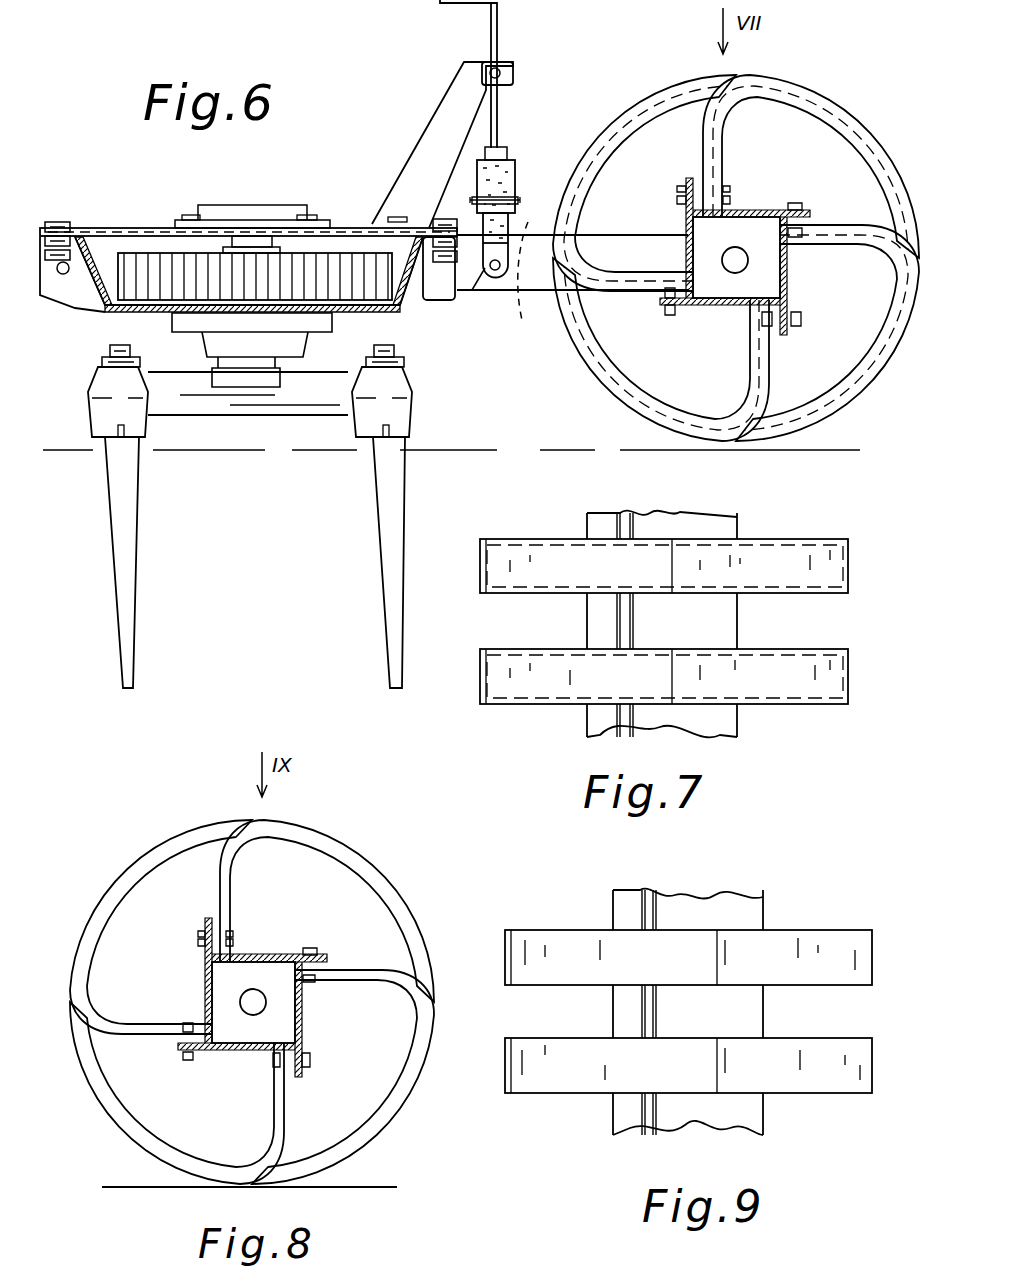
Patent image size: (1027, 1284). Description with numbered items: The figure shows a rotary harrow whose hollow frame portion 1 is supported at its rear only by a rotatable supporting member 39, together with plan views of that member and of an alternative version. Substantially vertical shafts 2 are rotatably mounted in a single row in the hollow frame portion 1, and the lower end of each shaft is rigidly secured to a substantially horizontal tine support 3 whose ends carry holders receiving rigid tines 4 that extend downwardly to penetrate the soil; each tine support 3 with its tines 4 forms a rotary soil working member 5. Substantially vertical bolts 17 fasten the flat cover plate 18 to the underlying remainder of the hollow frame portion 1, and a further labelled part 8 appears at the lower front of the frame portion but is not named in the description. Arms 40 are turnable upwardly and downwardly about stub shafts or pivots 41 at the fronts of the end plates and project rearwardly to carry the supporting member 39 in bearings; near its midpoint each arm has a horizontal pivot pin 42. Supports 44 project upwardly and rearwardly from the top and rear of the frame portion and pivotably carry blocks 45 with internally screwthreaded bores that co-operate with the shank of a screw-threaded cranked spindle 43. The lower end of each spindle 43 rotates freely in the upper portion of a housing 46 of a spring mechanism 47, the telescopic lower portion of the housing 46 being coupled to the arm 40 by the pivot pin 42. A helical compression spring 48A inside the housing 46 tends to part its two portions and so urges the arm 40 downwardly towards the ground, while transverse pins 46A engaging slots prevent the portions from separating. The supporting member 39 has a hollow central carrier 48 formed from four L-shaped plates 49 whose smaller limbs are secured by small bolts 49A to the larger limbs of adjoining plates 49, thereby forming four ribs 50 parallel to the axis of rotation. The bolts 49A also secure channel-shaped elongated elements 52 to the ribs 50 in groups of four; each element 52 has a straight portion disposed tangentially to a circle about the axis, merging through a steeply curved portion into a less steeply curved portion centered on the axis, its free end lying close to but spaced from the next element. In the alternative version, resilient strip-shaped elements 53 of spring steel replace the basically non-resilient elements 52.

In FIG. 6, the hollow frame portion 1 is at (123, 224).
In FIG. 6, the shafts 2 is at (262, 240).
In FIG. 6, the tine support 3 is at (198, 418).
In FIG. 6, the tines 4 is at (132, 567).
In FIG. 6, the rotary soil working member 5 is at (247, 577).
In FIG. 6, the louvered distributor 8 is at (140, 295).
In FIG. 6, the bolts 17 is at (57, 224).
In FIG. 6, the cover plate 18 is at (156, 228).
In FIG. 6, the rotatable supporting member 39 is at (828, 84).
In FIG. 7, the rotatable supporting member 39 is at (860, 592).
In FIG. 6, the arms 40 is at (612, 232).
In FIG. 6, the stub shafts or pivots 41 is at (63, 275).
In FIG. 6, the pivot pin 42 is at (485, 283).
In FIG. 6, the screw-threaded cranked spindle 43 is at (463, 13).
In FIG. 6, the supports 44 is at (444, 106).
In FIG. 6, the blocks 45 is at (520, 60).
In FIG. 6, the housing 46 is at (517, 165).
In FIG. 6, the transverse pins 46A is at (512, 208).
In FIG. 6, the spring mechanism 47 is at (530, 195).
In FIG. 6, the central carrier 48 is at (757, 208).
In FIG. 7, the central carrier 48 is at (716, 512).
In FIG. 8, the central carrier 48 is at (282, 948).
In FIG. 9, the central carrier 48 is at (744, 889).
In FIG. 6, the helical compression spring 48A is at (525, 281).
In FIG. 6, the plates 49 is at (790, 256).
In FIG. 7, the plates 49 is at (733, 628).
In FIG. 8, the plates 49 is at (207, 978).
In FIG. 9, the plates 49 is at (743, 1013).
In FIG. 6, the small bolts 49A is at (802, 318).
In FIG. 8, the small bolts 49A is at (312, 950).
In FIG. 6, the ribs 50 is at (688, 178).
In FIG. 7, the ribs 50 is at (620, 513).
In FIG. 8, the ribs 50 is at (200, 932).
In FIG. 9, the ribs 50 is at (646, 890).
In FIG. 6, the elongated elements 52 is at (652, 92).
In FIG. 7, the elongated elements 52 is at (551, 578).
In FIG. 8, the resilient strip-shaped elements 53 is at (170, 862).
In FIG. 9, the resilient strip-shaped elements 53 is at (570, 1048).